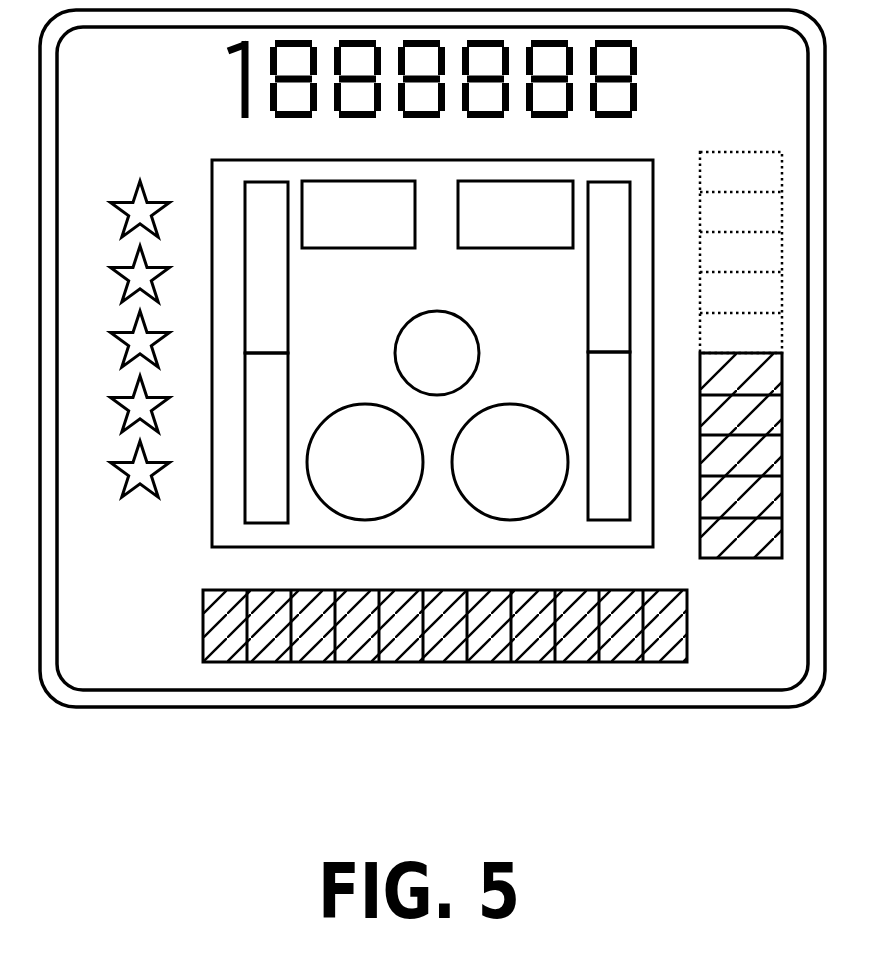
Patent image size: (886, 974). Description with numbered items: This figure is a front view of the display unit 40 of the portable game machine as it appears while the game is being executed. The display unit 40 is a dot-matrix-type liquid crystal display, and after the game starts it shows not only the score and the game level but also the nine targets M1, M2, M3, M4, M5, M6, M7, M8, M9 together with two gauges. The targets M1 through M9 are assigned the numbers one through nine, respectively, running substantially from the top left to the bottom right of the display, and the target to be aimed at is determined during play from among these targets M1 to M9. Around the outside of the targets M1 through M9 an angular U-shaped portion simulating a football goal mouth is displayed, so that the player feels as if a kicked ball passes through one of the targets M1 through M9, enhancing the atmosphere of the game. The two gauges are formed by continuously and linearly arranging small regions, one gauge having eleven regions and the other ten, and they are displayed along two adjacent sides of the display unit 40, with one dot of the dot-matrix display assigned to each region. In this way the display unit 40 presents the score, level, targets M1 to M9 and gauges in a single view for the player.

The display unit 40 is at (432, 400).
The target M1 is at (266, 267).
The target M2 is at (358, 214).
The target M3 is at (515, 214).
The target M4 is at (609, 267).
The target M5 is at (266, 438).
The target M6 is at (365, 462).
The target M7 is at (510, 462).
The target M8 is at (609, 436).
The target M9 is at (437, 353).